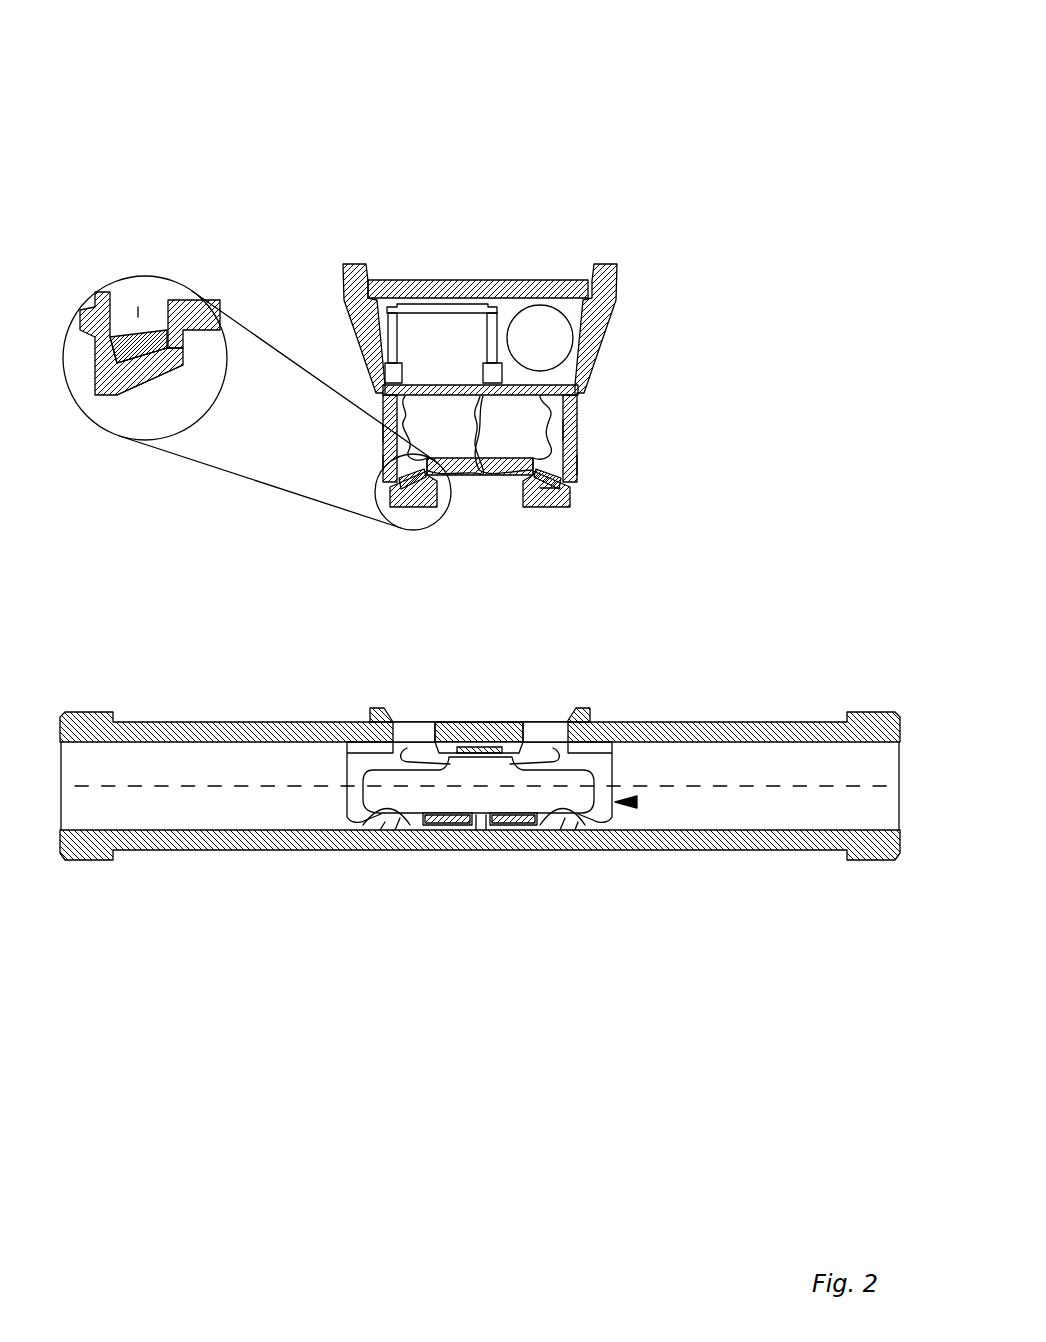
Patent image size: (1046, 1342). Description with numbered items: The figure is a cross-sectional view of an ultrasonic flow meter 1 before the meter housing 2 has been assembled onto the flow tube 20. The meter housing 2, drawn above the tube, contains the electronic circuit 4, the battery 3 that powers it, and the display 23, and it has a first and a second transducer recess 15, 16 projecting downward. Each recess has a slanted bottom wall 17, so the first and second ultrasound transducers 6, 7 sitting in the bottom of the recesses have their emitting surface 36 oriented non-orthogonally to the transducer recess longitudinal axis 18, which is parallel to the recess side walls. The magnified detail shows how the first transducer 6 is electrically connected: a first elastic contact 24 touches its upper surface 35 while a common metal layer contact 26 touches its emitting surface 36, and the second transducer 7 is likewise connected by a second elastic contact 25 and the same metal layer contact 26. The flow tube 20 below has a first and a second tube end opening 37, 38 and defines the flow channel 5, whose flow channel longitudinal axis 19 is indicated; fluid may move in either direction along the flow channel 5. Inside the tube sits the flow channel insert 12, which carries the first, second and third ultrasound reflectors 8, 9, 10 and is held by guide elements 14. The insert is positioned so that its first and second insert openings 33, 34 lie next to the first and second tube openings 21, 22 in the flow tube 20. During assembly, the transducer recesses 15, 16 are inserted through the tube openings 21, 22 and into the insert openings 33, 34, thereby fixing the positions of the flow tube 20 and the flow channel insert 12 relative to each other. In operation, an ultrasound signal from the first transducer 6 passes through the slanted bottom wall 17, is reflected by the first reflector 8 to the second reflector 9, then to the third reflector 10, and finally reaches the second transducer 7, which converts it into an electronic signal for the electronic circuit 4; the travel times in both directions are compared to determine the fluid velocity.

The ultrasonic flow meter 1 is at (184, 186).
The meter housing 2 is at (723, 192).
The battery 3 is at (543, 338).
The electronic circuit 4 is at (435, 312).
The flow channel 5 is at (157, 812).
The first ultrasound transducer 6 is at (400, 485).
The second ultrasound transducer 7 is at (557, 487).
The first ultrasound reflector 8 is at (447, 826).
The second ultrasound reflector 9 is at (473, 754).
The third ultrasound reflector 10 is at (510, 830).
The flow channel insert 12 is at (637, 802).
The guide element 14 is at (373, 770).
The first transducer recess 15 is at (383, 463).
The second transducer recess 16 is at (577, 467).
The slanted bottom wall 17 is at (418, 502).
The transducer recess longitudinal axis 18 is at (142, 395).
The flow channel longitudinal axis 19 is at (750, 785).
The flow tube 20 is at (243, 841).
The first tube opening 21 is at (413, 691).
The second tube opening 22 is at (542, 691).
The display 23 is at (537, 284).
The first elastic contact 24 is at (383, 434).
The second elastic contact 25 is at (577, 432).
The metal layer contact 26 is at (477, 435).
The first insert opening 33 is at (385, 752).
The second insert opening 34 is at (575, 757).
The upper surface 35 is at (105, 322).
The emitting surface 36 is at (177, 369).
The first tube end opening 37 is at (58, 770).
The second tube end opening 38 is at (898, 770).